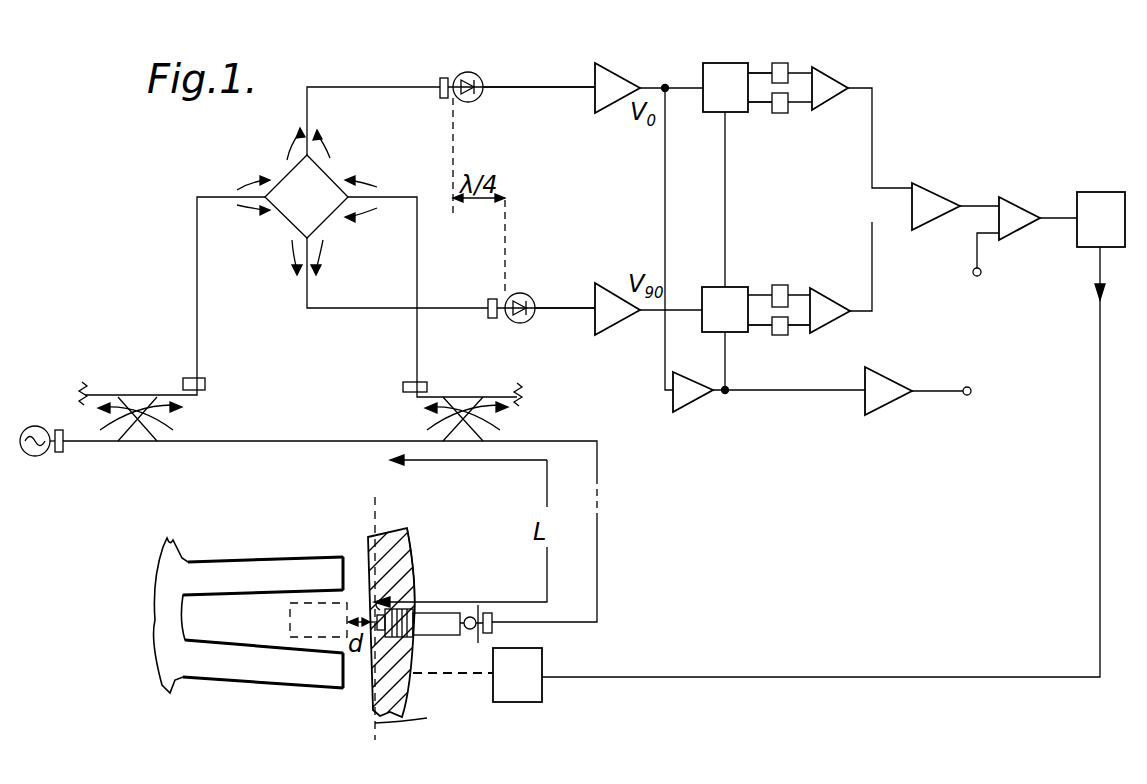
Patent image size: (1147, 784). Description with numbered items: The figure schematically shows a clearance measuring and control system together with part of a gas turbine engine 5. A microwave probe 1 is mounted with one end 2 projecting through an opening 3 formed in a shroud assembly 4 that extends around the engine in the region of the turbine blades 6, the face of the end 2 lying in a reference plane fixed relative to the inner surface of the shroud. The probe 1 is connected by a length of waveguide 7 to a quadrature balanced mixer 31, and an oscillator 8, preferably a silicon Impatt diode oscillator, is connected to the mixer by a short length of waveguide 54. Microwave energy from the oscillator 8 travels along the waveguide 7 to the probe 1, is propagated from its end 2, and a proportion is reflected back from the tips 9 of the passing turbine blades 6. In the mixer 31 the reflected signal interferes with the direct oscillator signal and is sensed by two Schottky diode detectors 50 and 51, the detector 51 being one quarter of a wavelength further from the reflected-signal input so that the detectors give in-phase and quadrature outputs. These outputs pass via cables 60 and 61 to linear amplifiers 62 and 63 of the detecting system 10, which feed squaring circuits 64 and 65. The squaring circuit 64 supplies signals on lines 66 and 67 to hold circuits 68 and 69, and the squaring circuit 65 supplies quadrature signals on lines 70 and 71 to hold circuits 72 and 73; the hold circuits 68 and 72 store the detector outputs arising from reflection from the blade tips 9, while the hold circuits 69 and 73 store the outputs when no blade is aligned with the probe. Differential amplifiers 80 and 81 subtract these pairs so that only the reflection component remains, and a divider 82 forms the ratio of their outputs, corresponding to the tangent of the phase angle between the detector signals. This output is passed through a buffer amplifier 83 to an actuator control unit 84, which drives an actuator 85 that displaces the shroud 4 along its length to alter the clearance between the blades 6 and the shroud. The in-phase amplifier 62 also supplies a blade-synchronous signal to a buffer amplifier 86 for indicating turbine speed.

The microwave probe 1 is at (440, 630).
The end of the probe 2 is at (410, 573).
The opening 3 is at (388, 598).
The shroud assembly 4 is at (403, 693).
The gas turbine engine 5 is at (195, 692).
The turbine blades 6 is at (247, 568).
The waveguide 7 is at (598, 540).
The oscillator 8 is at (33, 457).
The tips of the turbine blades 9 is at (347, 558).
The detecting system 10 is at (643, 398).
The quadrature balanced mixer 31 is at (272, 157).
The Schottky diode detector 50 is at (473, 74).
The Schottky diode detector 51 is at (512, 323).
The short length of waveguide 54 is at (88, 443).
The cable 60 is at (565, 60).
The cable 61 is at (568, 311).
The linear amplifier 62 is at (623, 83).
The linear amplifier 63 is at (607, 283).
The squaring circuit 64 is at (726, 76).
The squaring circuit 65 is at (703, 287).
The line 66 is at (762, 74).
The line 67 is at (763, 103).
The hold circuit 68 is at (787, 66).
The hold circuit 69 is at (780, 114).
The line 70 is at (763, 286).
The line 71 is at (762, 326).
The hold circuit 72 is at (776, 289).
The hold circuit 73 is at (782, 335).
The differential amplifier 80 is at (830, 83).
The differential amplifier 81 is at (842, 318).
The divider 82 is at (928, 195).
The buffer amplifier 83 is at (1008, 205).
The actuator control unit 84 is at (1100, 205).
The actuator 85 is at (537, 693).
The buffer amplifier 86 is at (883, 382).